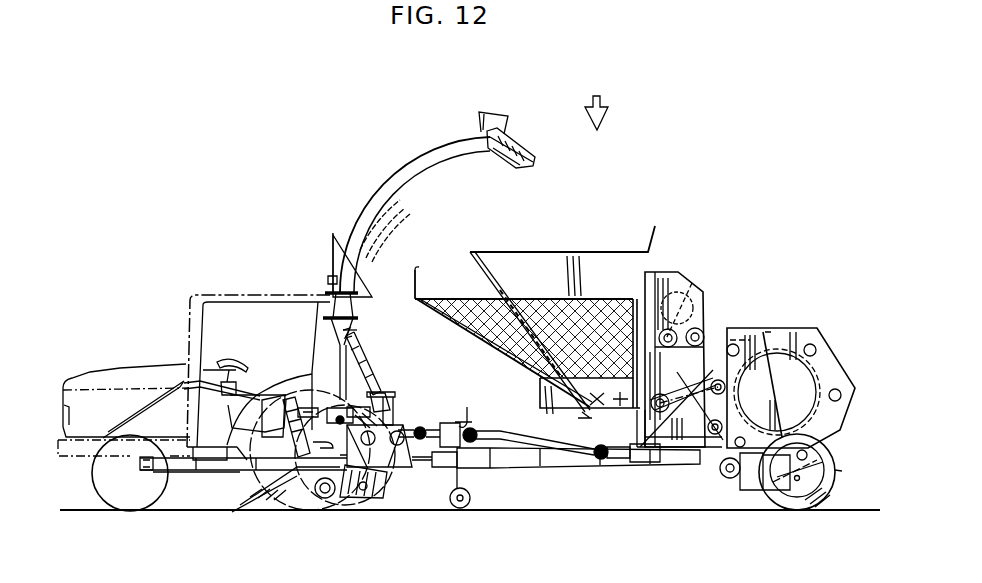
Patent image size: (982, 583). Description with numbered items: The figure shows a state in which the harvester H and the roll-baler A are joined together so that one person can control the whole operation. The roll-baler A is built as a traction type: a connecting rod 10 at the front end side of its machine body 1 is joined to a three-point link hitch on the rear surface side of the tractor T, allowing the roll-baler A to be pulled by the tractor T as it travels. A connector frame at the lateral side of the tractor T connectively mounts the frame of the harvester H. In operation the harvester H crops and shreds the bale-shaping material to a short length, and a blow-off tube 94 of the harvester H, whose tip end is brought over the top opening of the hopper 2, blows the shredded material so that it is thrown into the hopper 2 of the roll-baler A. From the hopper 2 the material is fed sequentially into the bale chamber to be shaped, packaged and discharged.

The tractor T is at (228, 286).
The blow-off tube 94 is at (432, 162).
The hopper 2 is at (552, 244).
The harvester H is at (366, 376).
The connecting rod 10 is at (412, 462).
The machine body 1 is at (586, 472).
The roll-baler A is at (596, 99).